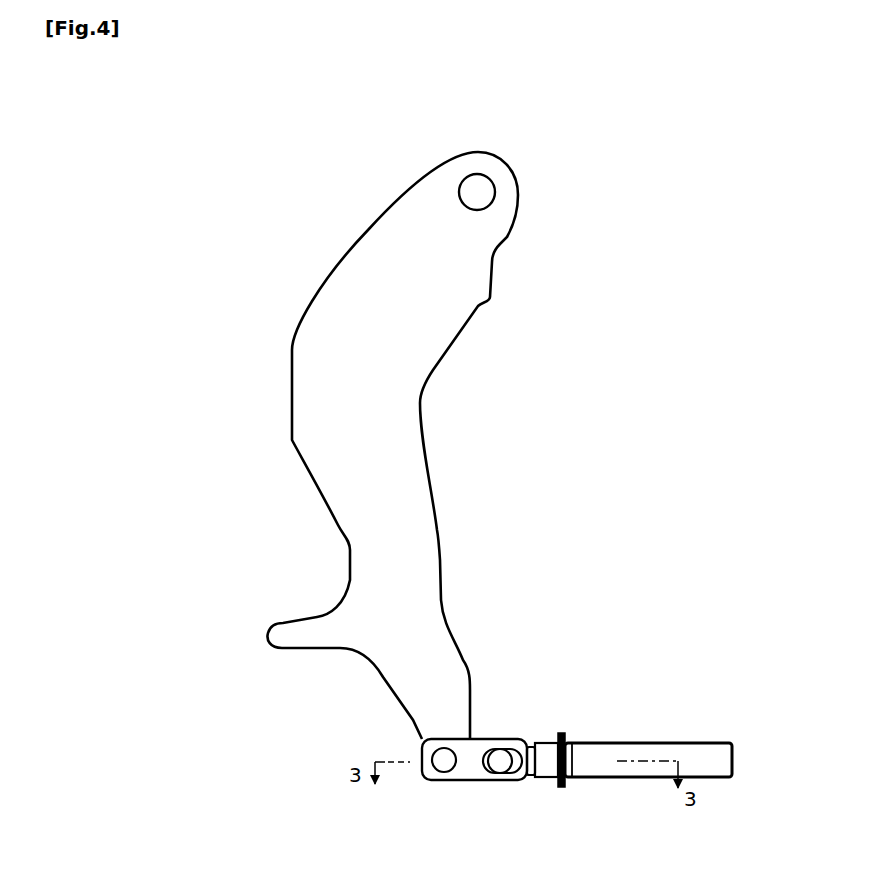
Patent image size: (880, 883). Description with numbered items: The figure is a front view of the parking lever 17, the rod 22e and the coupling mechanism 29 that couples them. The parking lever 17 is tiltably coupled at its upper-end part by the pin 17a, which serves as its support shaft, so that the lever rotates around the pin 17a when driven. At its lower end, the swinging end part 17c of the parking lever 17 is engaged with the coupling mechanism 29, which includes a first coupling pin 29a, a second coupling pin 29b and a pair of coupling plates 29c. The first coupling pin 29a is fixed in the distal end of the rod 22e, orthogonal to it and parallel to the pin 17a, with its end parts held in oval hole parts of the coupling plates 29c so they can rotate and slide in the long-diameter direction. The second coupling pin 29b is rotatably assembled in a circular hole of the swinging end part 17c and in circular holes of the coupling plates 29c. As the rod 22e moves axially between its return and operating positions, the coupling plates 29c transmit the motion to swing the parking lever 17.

The parking lever 17 is at (415, 438).
The pin 17a is at (482, 195).
The swinging end part 17c is at (422, 784).
The coupling mechanism 29 is at (481, 736).
The first coupling pin 29a is at (500, 773).
The second coupling pin 29b is at (444, 772).
The coupling plates 29c is at (520, 778).
The rod 22e is at (692, 753).